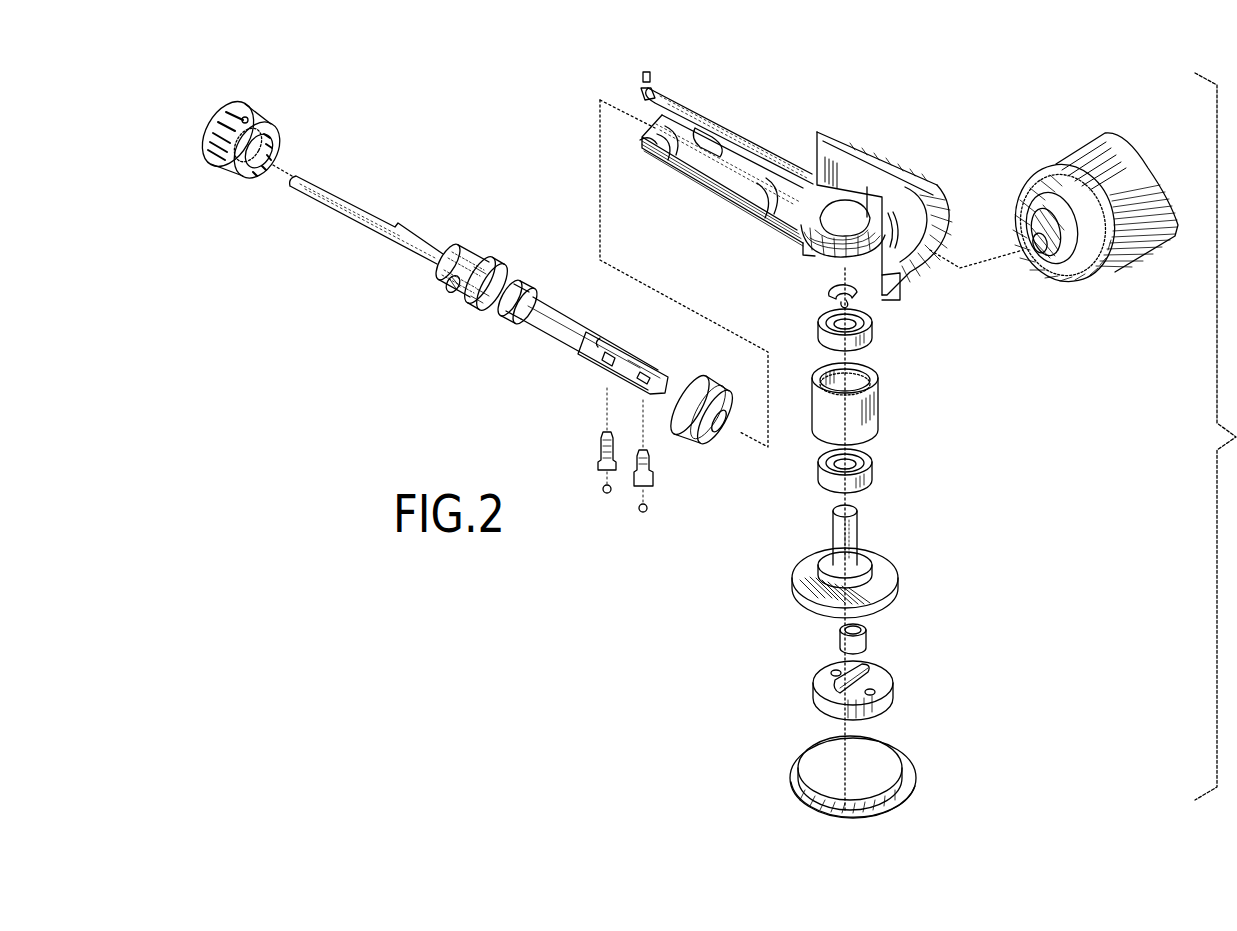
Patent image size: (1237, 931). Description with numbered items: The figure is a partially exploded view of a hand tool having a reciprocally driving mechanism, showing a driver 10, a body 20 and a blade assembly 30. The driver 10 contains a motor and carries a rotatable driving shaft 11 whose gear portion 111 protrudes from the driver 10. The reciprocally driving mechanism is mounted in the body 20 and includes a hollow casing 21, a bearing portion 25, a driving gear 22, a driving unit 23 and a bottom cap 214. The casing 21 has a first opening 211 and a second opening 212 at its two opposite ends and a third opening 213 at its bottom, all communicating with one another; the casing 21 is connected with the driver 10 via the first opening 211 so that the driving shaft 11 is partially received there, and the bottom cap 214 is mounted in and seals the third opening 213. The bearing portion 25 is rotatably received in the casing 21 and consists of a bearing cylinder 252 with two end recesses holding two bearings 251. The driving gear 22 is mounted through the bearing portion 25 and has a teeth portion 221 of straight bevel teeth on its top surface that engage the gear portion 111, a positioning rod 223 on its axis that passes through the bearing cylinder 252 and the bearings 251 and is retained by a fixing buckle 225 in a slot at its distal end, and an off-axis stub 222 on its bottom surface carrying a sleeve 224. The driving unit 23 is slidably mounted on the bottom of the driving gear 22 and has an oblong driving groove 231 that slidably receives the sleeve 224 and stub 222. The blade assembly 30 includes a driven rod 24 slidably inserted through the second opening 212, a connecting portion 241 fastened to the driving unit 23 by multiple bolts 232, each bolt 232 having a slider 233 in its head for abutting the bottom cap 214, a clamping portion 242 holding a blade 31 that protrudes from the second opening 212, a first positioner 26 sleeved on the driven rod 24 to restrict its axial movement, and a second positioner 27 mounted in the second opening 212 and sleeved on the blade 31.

The driver 10 is at (1128, 260).
The driving shaft 11 is at (1032, 254).
The gear portion 111 is at (1035, 227).
The body 20 is at (897, 132).
The hollow casing 21 is at (730, 134).
The first opening 211 is at (928, 203).
The second opening 212 is at (640, 140).
The third opening 213 is at (822, 240).
The bottom cap 214 is at (910, 773).
The driving gear 22 is at (878, 552).
The teeth portion 221 is at (813, 590).
The stub 222 is at (858, 587).
The positioning rod 223 is at (848, 532).
The sleeve 224 is at (840, 638).
The fixing buckle 225 is at (830, 294).
The driving unit 23 is at (884, 698).
The oblong driving groove 231 is at (870, 675).
The bolts 232 is at (648, 460).
The slider 233 is at (650, 511).
The driven rod 24 is at (557, 338).
The connecting portion 241 is at (625, 372).
The clamping portion 242 is at (446, 279).
The bearing portion 25 is at (888, 422).
The bearings 251 is at (868, 338).
The bearing cylinder 252 is at (871, 404).
The first positioner 26 is at (704, 388).
The second positioner 27 is at (205, 162).
The blade assembly 30 is at (303, 205).
The blade 31 is at (372, 228).